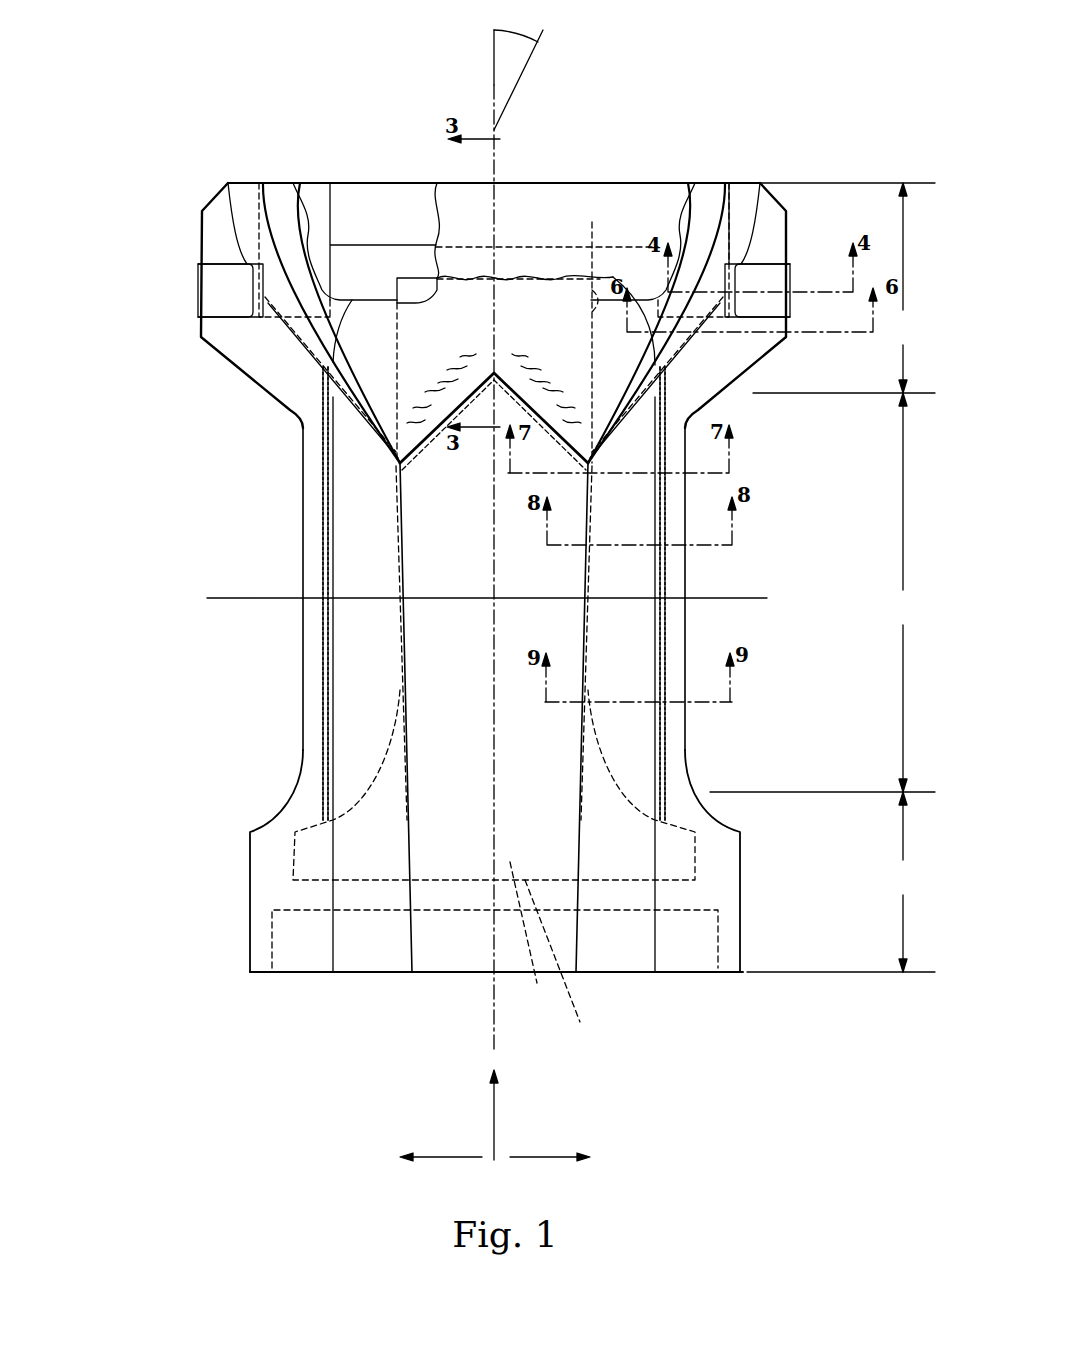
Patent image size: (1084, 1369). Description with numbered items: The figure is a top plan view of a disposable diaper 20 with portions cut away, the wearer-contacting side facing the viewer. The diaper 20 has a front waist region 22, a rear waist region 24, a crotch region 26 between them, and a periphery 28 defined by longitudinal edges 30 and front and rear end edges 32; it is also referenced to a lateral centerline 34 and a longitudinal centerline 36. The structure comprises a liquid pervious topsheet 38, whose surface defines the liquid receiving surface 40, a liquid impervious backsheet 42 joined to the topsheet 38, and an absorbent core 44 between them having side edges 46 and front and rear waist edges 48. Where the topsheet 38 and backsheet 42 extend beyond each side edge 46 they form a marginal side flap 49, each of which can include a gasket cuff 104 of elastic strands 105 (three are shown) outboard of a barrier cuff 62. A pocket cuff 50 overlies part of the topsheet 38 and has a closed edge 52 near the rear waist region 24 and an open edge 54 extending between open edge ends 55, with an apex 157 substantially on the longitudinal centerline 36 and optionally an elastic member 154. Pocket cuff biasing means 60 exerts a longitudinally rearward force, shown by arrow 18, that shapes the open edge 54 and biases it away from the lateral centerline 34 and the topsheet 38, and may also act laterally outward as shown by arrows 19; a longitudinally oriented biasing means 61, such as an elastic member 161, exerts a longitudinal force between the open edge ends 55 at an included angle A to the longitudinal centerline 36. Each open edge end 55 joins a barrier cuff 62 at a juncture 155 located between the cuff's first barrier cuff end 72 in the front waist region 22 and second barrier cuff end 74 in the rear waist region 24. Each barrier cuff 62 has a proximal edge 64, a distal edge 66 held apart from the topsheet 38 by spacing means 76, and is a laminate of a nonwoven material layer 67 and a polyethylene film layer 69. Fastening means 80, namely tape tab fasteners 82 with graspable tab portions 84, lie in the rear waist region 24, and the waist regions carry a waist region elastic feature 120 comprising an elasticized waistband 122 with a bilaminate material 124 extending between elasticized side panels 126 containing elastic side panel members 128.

The arrow 18 is at (497, 1115).
The arrows 19 is at (452, 1160).
The diaper 20 is at (190, 508).
The front waist region 22 is at (904, 882).
The rear waist region 24 is at (844, 288).
The crotch region 26 is at (822, 592).
The periphery 28 is at (278, 812).
The longitudinal edges 30 is at (302, 560).
The front and rear end edges 32 is at (673, 183).
The lateral centerline 34 is at (230, 597).
The longitudinal centerline 36 is at (495, 158).
The topsheet 38 is at (310, 232).
The liquid receiving surface 40 is at (535, 567).
The backsheet 42 is at (395, 260).
The absorbent core 44 is at (410, 285).
The side edges 46 is at (397, 285).
The front and rear waist edges 48 is at (416, 283).
The marginal side flap 49 is at (308, 665).
The pocket cuff 50 is at (473, 290).
The closed edge 52 is at (343, 321).
The open edge 54 is at (418, 450).
The open edge ends 55 is at (403, 468).
The pocket cuff biasing means 60 is at (398, 422).
The longitudinally oriented biasing means 61 is at (500, 302).
The barrier cuff 62 is at (373, 435).
The proximal edge 64 is at (300, 193).
The distal edge 66 is at (238, 208).
The nonwoven material layer 67 is at (240, 212).
The liquid impermeable polyethylene film layer 69 is at (280, 232).
The first barrier cuff end 72 is at (369, 943).
The second barrier cuff end 74 is at (243, 192).
The spacing means 76 is at (290, 332).
The fastening means 80 is at (175, 315).
The tape tab fasteners 82 is at (198, 285).
The tab portion 84 is at (494, 290).
The gasket cuff 104 is at (317, 735).
The elastic strands 105 is at (323, 802).
The waist region elastic feature 120 is at (523, 176).
The elasticized waistband 122 is at (565, 187).
The bilaminate material 124 is at (428, 192).
The elasticized side panels 126 is at (293, 195).
The elastic side panel member 128 is at (318, 195).
The elastic member 154 is at (490, 372).
The junctures 155 is at (397, 466).
The apex 157 is at (533, 367).
The elastic member 161 is at (500, 337).